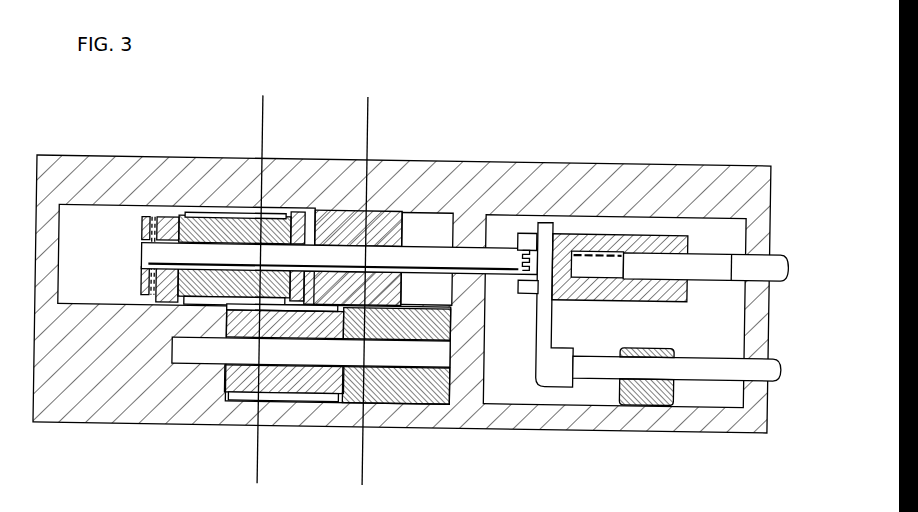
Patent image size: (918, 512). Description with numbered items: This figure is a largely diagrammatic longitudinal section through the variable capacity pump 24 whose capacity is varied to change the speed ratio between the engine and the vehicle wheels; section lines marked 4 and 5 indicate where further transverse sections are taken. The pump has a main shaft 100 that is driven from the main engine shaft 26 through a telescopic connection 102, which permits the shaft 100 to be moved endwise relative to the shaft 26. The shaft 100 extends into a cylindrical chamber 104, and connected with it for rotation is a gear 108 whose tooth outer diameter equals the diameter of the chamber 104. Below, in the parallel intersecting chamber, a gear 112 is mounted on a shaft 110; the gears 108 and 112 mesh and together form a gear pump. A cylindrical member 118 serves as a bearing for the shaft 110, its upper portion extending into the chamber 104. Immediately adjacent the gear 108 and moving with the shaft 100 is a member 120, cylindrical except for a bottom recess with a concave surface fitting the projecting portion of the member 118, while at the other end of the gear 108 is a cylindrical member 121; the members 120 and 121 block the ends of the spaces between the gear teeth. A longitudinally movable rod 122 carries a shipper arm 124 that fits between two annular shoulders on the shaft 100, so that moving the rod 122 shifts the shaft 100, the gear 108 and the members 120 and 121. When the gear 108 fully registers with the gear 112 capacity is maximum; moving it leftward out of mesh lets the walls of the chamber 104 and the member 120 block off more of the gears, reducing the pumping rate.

The pump 24 is at (562, 167).
The main engine shaft 26 is at (775, 252).
The main shaft 100 is at (437, 252).
The telescopic connection 102 is at (659, 233).
The cylindrical chamber 104 is at (424, 194).
The gear 108 is at (228, 220).
The shaft 110 is at (201, 350).
The gear 112 is at (306, 375).
The cylindrical member 118 is at (441, 388).
The member 120 is at (346, 211).
The cylindrical member 121 is at (174, 215).
The rod 122 is at (743, 365).
The shipper arm 124 is at (122, 214).
The section line 4- 4 is at (258, 101).
The section line 5- 5 is at (363, 101).